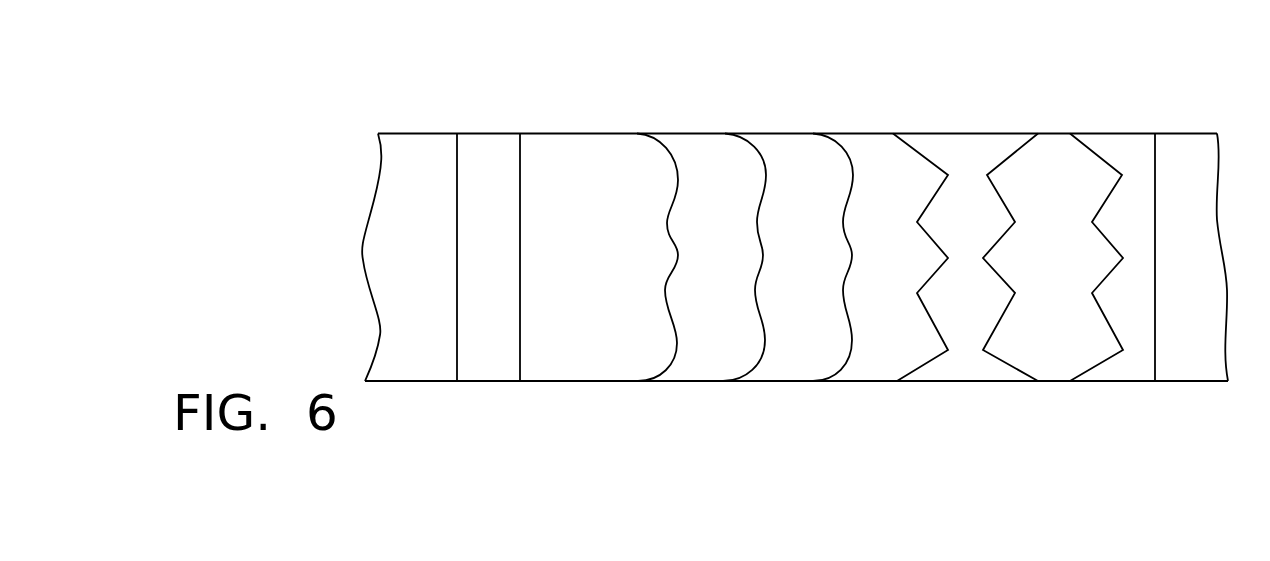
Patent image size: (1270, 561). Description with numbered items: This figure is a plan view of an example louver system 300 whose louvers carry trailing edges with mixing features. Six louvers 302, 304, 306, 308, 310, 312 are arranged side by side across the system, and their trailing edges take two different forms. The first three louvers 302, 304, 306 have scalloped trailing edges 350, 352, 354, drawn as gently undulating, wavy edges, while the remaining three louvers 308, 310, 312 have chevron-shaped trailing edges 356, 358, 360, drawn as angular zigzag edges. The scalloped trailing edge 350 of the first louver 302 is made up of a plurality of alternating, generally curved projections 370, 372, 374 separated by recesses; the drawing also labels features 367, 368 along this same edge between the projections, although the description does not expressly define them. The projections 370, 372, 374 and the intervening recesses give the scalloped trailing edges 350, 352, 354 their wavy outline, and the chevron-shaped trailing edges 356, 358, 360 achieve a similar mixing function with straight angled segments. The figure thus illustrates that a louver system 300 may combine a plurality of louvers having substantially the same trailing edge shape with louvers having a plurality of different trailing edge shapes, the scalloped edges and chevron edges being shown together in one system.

The louver system 300 is at (462, 95).
The louver 302 is at (620, 360).
The louver 304 is at (707, 360).
The louver 306 is at (793, 360).
The louver 308 is at (882, 358).
The louver 310 is at (970, 358).
The louver 312 is at (1057, 358).
The scalloped trailing edge 350 is at (686, 176).
The scalloped trailing edge 352 is at (780, 175).
The scalloped trailing edge 354 is at (868, 176).
The chevron-shaped trailing edge 356 is at (948, 174).
The chevron-shaped trailing edge 358 is at (1034, 178).
The chevron-shaped trailing edge 360 is at (1123, 178).
The first trough 367 is at (667, 223).
The second trough 368 is at (665, 290).
The curved projection 370 is at (669, 146).
The curved projection 372 is at (678, 255).
The curved projection 374 is at (677, 343).